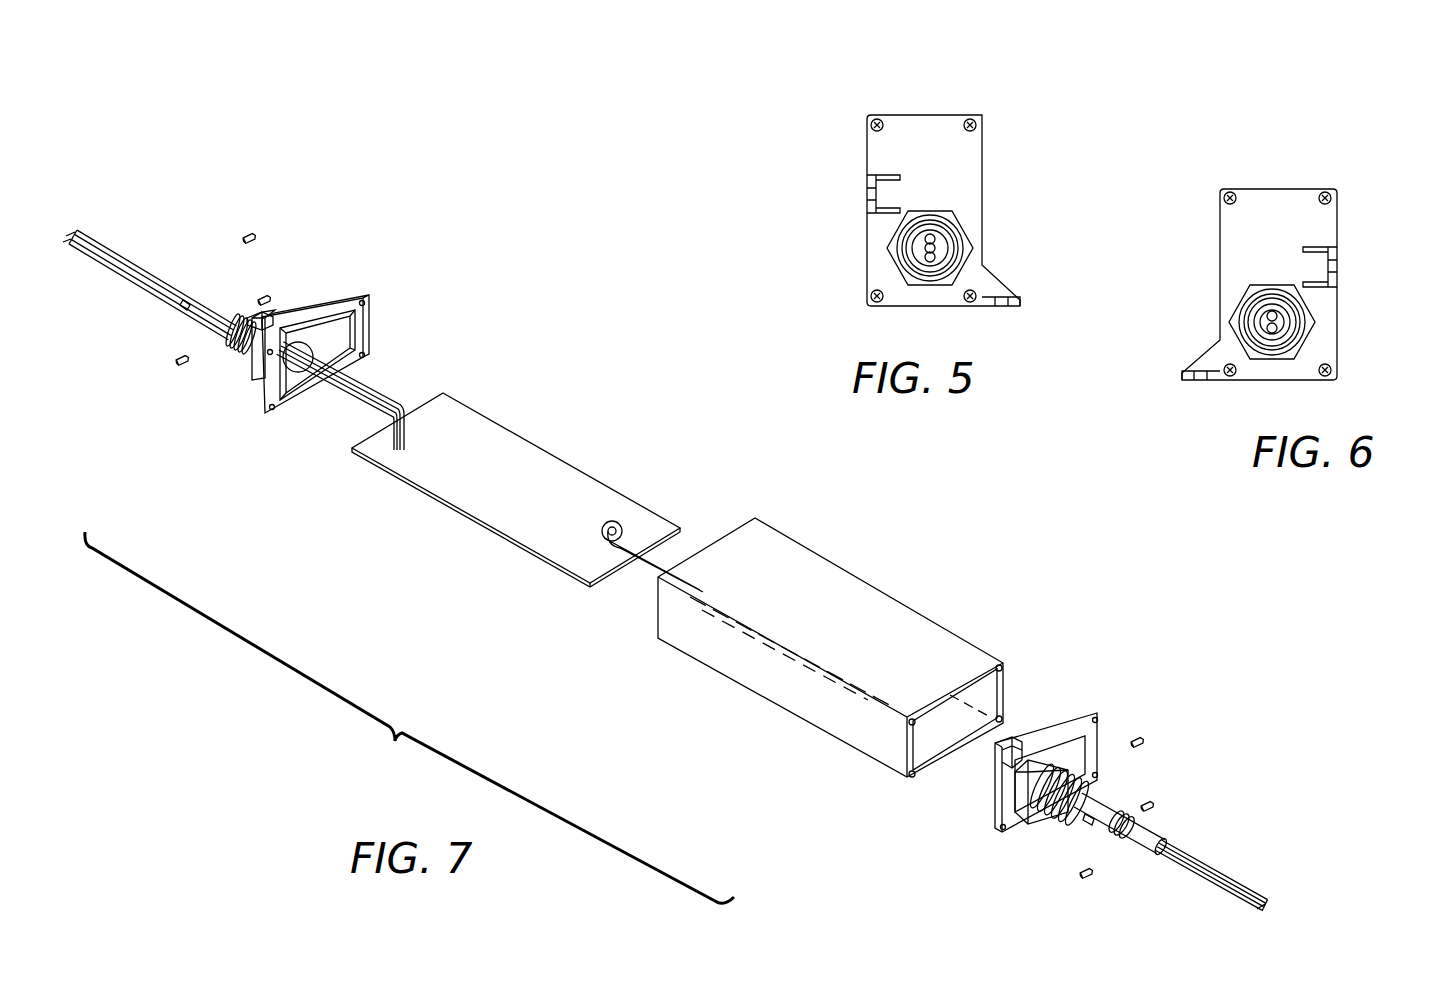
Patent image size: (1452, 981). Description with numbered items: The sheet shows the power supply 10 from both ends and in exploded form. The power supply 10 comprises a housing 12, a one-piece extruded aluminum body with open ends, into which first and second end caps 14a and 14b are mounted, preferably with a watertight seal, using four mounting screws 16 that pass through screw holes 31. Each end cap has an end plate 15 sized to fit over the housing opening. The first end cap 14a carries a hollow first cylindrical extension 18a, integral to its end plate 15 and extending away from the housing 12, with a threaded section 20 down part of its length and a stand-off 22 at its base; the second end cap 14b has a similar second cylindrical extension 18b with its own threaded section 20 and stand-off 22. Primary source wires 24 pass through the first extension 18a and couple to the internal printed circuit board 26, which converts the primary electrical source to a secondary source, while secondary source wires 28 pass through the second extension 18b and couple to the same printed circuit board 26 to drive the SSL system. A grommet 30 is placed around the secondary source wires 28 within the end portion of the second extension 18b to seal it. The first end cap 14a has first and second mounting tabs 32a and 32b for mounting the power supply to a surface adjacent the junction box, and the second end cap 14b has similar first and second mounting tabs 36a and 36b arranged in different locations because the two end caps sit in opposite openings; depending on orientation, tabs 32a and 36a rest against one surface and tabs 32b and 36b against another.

In FIG. 5, the power supply 10 is at (862, 80).
In FIG. 6, the power supply 10 is at (1335, 150).
In FIG. 7, the power supply 10 is at (432, 612).
In FIG. 5, the housing 12 is at (932, 206).
In FIG. 6, the housing 12 is at (1265, 279).
In FIG. 7, the housing 12 is at (872, 587).
In FIG. 5, the first end cap 14a is at (932, 217).
In FIG. 7, the first end cap 14a is at (285, 338).
In FIG. 6, the second end cap 14b is at (1265, 290).
In FIG. 7, the second end cap 14b is at (1045, 744).
In FIG. 5, the end plate 15 is at (967, 168).
In FIG. 6, the end plate 15 is at (1235, 242).
In FIG. 7, the end plate 15 is at (343, 336).
In FIG. 5, the mounting screws 16 is at (867, 296).
In FIG. 6, the mounting screws 16 is at (1337, 370).
In FIG. 7, the mounting screws 16 is at (256, 232).
In FIG. 5, the first cylindrical extension 18a is at (887, 235).
In FIG. 7, the first cylindrical extension 18a is at (228, 356).
In FIG. 6, the second cylindrical extension 18b is at (1313, 308).
In FIG. 7, the second cylindrical extension 18b is at (1100, 797).
In FIG. 7, the threaded section 20 is at (229, 330).
In FIG. 7, the stand-off 22 is at (258, 380).
In FIG. 5, the primary source wires 24 is at (935, 247).
In FIG. 7, the primary source wires 24 is at (138, 258).
In FIG. 7, the printed circuit board 26 is at (550, 468).
In FIG. 7, the secondary source wires 28 is at (1165, 845).
In FIG. 7, the grommet 30 is at (1125, 842).
In FIG. 7, the screw holes 31 is at (1003, 820).
In FIG. 5, the first mounting tab 32a is at (1015, 305).
In FIG. 7, the first mounting tab 32a is at (250, 312).
In FIG. 5, the second mounting tab 32b is at (867, 190).
In FIG. 7, the second mounting tab 32b is at (998, 763).
In FIG. 6, the first mounting tab 36a is at (1186, 378).
In FIG. 6, the second mounting tab 36b is at (1337, 265).